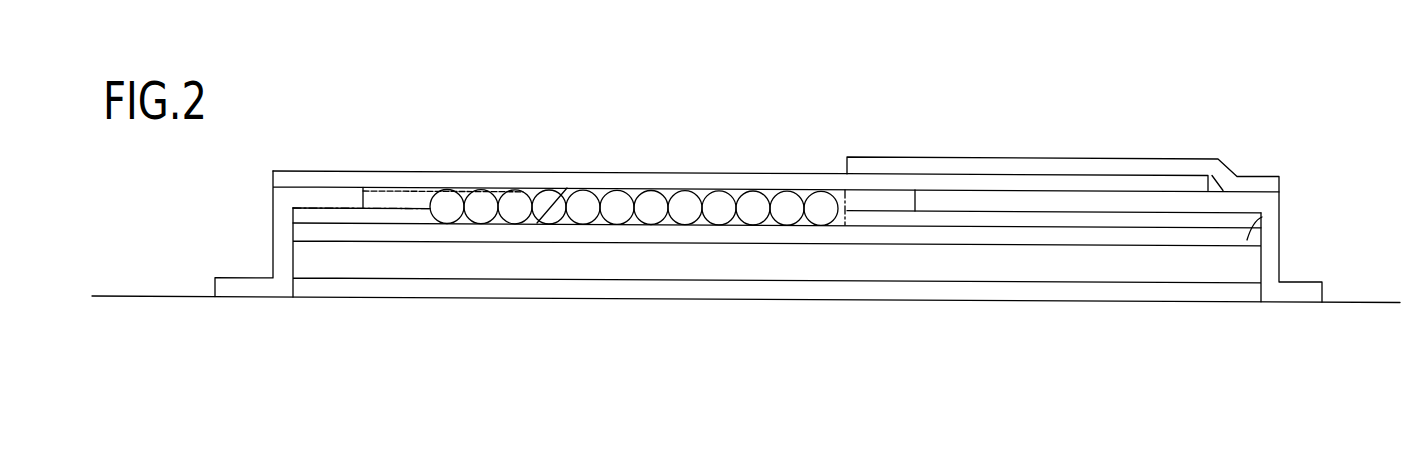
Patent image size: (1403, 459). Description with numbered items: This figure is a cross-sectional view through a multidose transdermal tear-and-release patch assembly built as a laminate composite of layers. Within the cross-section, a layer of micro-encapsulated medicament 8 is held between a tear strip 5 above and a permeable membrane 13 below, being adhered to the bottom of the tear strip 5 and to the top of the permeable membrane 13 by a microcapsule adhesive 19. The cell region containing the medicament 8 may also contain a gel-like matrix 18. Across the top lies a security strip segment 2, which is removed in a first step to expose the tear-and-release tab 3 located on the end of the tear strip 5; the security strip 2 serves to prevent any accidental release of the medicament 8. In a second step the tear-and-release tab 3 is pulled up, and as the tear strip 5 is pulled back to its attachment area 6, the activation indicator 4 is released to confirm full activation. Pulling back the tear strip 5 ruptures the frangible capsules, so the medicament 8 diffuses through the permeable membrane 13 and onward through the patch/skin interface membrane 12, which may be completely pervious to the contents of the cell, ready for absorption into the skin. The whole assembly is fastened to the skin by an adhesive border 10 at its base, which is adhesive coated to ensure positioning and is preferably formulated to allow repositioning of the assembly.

The security strip segment 2 is at (1173, 160).
The tear-and-release tab 3 is at (1127, 180).
The activation indicator 4 is at (500, 188).
The tear strip 5 is at (792, 177).
The attachment area 6 is at (363, 173).
The micro-encapsulated medicament 8 is at (653, 198).
The adhesive border 10 is at (1295, 293).
The patch/skin interface membrane 12 is at (797, 290).
The permeable membrane 13 is at (1262, 217).
The gel-like matrix 18 is at (633, 225).
The microcapsule adhesive 19 is at (563, 225).